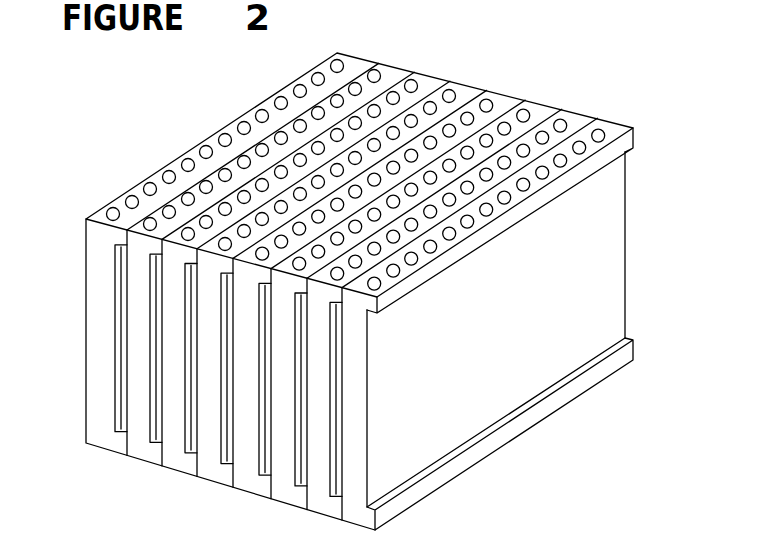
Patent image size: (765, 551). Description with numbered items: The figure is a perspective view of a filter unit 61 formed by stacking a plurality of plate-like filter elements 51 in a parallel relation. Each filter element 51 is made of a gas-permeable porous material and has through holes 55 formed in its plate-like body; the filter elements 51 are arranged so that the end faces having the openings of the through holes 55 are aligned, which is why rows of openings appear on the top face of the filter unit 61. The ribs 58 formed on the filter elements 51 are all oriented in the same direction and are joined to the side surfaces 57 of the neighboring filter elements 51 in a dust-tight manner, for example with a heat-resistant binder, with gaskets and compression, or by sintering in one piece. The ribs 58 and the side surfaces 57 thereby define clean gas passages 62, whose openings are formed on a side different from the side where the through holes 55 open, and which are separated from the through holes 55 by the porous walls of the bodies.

The filter element 51 is at (92, 342).
The through holes 55 is at (150, 190).
The side surfaces 57 is at (592, 275).
The ribs 58 is at (407, 287).
The filter unit 61 is at (214, 122).
The clean gas passages 62 is at (120, 406).